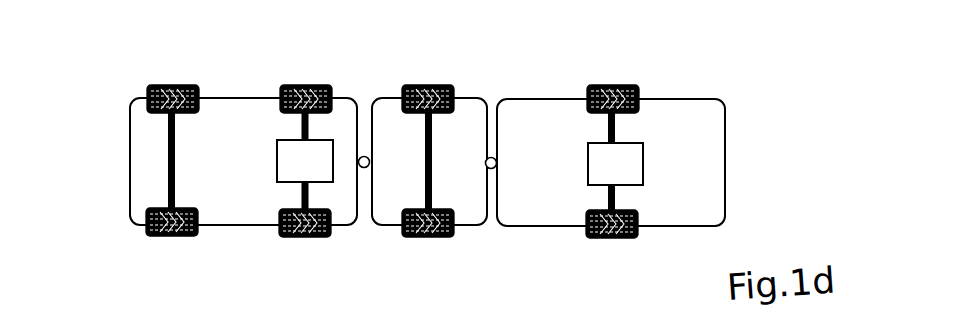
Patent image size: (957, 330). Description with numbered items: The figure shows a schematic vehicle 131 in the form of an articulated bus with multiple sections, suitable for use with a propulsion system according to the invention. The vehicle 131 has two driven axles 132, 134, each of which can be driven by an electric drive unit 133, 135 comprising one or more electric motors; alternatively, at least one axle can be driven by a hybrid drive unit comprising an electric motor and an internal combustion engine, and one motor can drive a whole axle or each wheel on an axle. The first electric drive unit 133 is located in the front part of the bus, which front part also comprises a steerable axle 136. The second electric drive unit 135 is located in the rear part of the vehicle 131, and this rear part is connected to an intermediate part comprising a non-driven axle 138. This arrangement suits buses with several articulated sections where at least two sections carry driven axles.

The vehicle 131 is at (485, 80).
The driven axle 132 is at (297, 195).
The first electric drive unit 133 is at (277, 160).
The driven axle 134 is at (608, 195).
The second electric drive unit 135 is at (587, 160).
The steerable axle 136 is at (165, 165).
The non-driven axle 138 is at (420, 167).